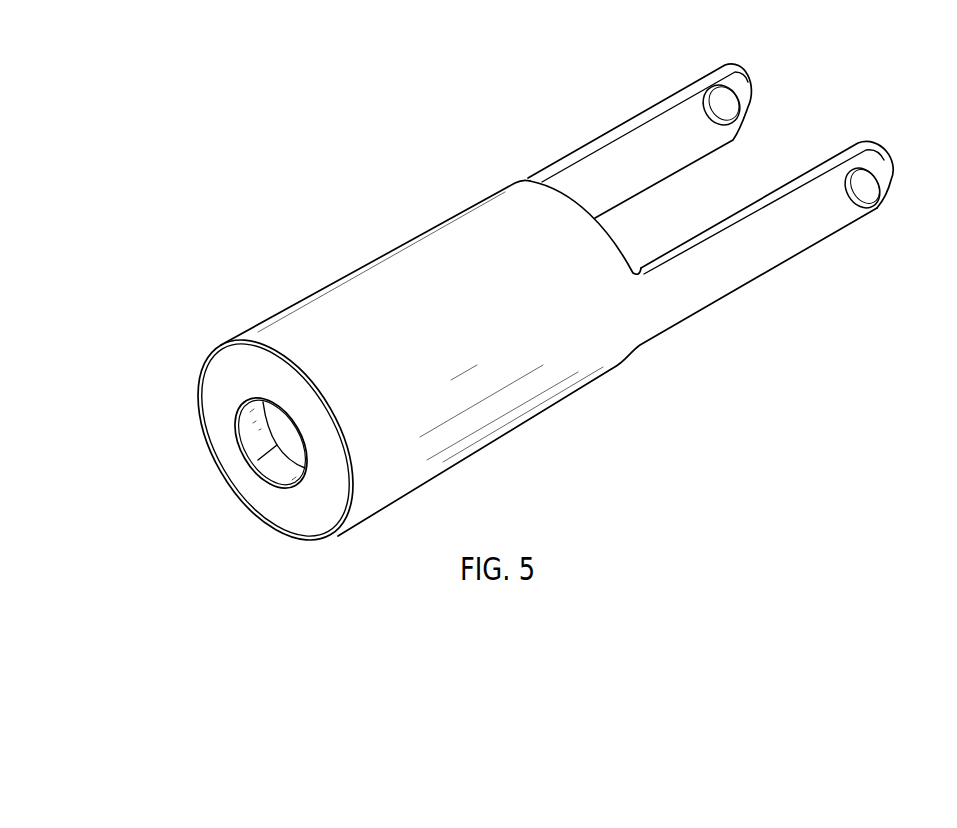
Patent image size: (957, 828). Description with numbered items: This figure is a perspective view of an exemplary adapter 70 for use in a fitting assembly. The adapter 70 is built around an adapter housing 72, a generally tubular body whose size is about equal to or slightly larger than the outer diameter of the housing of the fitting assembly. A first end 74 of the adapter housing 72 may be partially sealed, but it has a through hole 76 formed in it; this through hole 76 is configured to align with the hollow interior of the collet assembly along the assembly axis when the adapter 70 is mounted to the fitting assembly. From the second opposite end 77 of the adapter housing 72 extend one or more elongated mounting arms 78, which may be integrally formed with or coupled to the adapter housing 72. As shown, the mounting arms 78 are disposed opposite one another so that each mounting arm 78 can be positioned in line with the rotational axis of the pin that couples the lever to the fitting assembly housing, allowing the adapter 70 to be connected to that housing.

The adapter 70 is at (519, 317).
The adapter housing 72 is at (450, 437).
The first end 74 is at (213, 410).
The through hole 76 is at (258, 460).
The second opposite end 77 is at (583, 205).
The mounting arms 78 is at (665, 165).